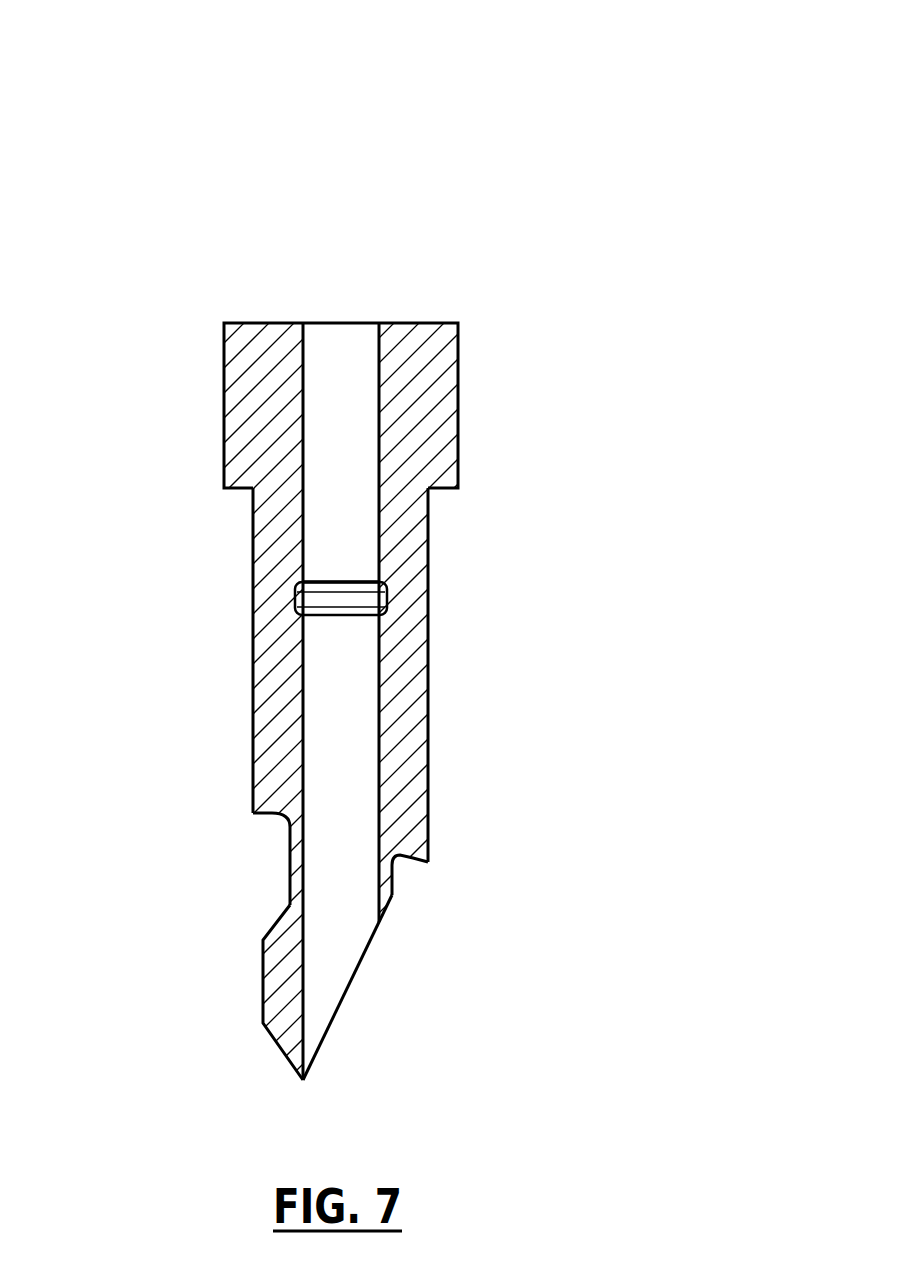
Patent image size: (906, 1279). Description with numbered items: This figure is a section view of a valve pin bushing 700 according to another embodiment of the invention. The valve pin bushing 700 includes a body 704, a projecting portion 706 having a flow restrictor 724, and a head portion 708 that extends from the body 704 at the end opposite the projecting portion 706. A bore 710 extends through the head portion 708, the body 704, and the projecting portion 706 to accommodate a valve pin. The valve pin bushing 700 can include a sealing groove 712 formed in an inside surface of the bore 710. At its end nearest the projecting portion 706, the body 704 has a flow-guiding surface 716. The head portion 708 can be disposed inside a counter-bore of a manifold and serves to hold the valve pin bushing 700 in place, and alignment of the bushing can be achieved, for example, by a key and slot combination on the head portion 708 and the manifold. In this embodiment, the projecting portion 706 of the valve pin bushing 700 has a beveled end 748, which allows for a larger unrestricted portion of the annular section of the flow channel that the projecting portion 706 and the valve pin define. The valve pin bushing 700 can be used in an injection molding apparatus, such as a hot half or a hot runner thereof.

The valve pin bushing 700 is at (660, 199).
The body 704 is at (270, 640).
The projecting portion 706 is at (232, 930).
The head portion 708 is at (243, 402).
The bore 710 is at (380, 366).
The sealing groove 712 is at (388, 598).
The flow-guiding surface 716 is at (262, 818).
The flow restrictor 724 is at (278, 995).
The beveled end 748 is at (366, 952).